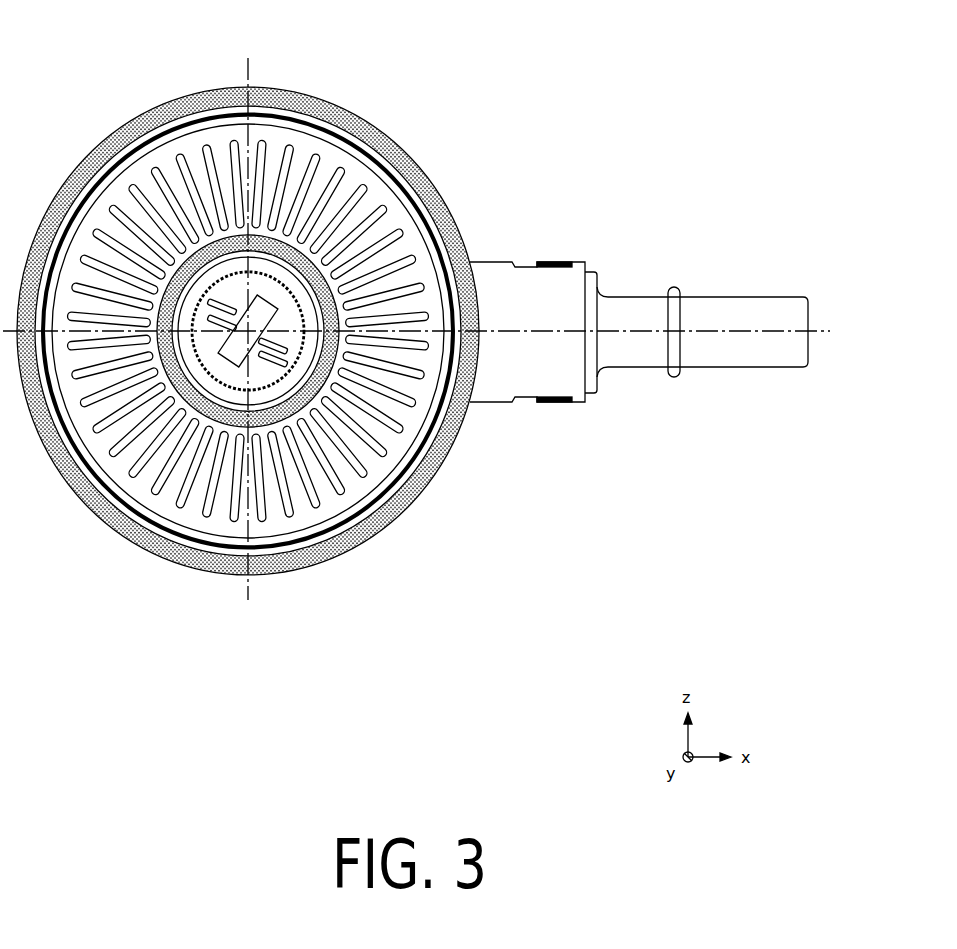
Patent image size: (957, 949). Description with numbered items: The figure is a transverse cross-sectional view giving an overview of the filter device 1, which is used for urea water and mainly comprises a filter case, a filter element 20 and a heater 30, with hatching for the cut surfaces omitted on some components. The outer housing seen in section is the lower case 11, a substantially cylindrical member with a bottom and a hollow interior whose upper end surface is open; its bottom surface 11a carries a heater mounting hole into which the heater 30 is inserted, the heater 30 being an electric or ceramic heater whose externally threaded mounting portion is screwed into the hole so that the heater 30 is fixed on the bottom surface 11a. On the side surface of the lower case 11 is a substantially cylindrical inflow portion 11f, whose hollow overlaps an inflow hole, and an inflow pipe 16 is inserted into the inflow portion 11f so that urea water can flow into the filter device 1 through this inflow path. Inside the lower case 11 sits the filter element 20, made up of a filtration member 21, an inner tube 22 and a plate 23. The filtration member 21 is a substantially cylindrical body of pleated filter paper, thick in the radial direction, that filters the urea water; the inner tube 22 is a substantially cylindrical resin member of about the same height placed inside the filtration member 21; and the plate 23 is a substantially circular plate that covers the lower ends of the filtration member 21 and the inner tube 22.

The filter device 1 is at (641, 25).
The lower case 11 is at (275, 331).
The bottom surface 11a is at (273, 331).
The inflow portion 11f is at (533, 361).
The inflow pipe 16 is at (702, 364).
The filter element 20 is at (467, 563).
The filtration member 21 is at (292, 418).
The inner tube 22 is at (263, 358).
The plate 23 is at (248, 373).
The heater 30 is at (279, 223).